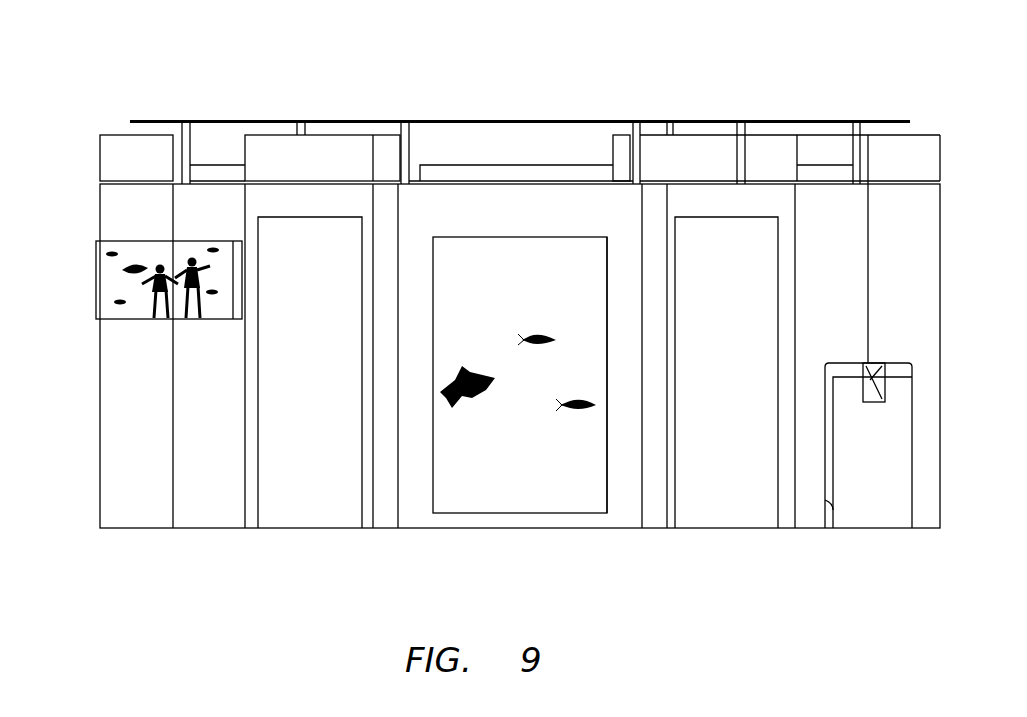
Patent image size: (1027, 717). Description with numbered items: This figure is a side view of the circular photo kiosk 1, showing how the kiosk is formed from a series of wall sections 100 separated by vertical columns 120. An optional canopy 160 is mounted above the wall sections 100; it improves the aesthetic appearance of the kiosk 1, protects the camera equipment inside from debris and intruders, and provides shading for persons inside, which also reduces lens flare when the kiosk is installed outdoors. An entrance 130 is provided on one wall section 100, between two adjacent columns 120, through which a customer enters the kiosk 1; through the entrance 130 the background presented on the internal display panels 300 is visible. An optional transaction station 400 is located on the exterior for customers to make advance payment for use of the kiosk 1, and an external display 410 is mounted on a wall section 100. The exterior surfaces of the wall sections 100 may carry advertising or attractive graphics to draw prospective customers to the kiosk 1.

The photo kiosk 1 is at (170, 48).
The wall section 100 is at (195, 441).
The column 120 is at (305, 512).
The entrance 130 is at (607, 507).
The canopy 160 is at (128, 120).
The display panel 300 is at (502, 476).
The transaction station 400 is at (868, 500).
The external display 410 is at (96, 270).